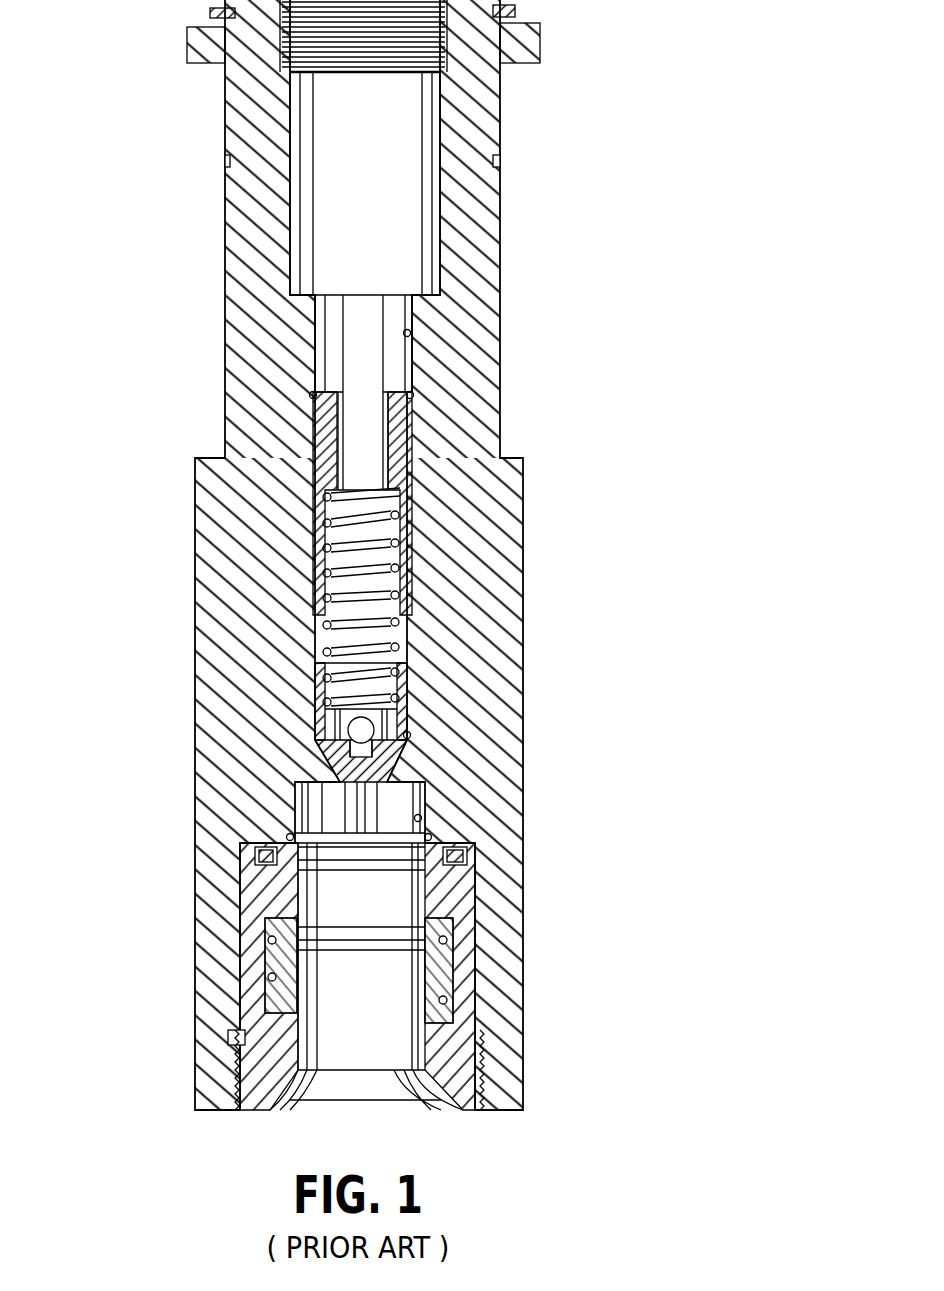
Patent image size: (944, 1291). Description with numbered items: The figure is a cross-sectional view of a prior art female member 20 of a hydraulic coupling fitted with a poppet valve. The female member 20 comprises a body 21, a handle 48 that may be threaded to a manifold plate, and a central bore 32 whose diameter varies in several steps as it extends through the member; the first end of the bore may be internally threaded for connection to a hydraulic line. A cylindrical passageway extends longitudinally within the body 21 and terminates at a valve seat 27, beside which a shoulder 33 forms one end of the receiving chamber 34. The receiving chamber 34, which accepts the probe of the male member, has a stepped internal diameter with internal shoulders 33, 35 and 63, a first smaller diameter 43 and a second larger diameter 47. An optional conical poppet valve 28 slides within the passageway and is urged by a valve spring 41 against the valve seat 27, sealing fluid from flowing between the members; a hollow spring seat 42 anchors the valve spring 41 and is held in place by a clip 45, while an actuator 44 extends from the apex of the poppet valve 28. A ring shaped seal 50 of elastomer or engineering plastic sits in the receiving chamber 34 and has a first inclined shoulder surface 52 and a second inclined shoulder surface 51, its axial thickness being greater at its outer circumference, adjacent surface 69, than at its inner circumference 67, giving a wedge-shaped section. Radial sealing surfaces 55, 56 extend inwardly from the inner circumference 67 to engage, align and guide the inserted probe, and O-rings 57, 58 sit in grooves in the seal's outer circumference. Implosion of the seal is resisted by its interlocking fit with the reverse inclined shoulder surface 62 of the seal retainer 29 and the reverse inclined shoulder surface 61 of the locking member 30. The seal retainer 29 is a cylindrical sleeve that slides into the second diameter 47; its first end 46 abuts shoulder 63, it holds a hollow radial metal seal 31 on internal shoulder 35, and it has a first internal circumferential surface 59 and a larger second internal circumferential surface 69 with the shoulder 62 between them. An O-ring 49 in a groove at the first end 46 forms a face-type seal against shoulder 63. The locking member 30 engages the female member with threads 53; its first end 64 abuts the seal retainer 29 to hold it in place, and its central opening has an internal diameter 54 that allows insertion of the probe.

The female member 20 is at (180, 691).
The body 21 is at (218, 572).
The valve seat 27 is at (410, 735).
The poppet valve 28 is at (318, 752).
The seal retainer 29 is at (470, 918).
The locking member 30 is at (460, 1110).
The hollow radial metal seal 31 is at (286, 836).
The central bore 32 is at (410, 333).
The shoulder 33 is at (422, 790).
The receiving chamber 34 is at (425, 905).
The internal shoulder 35 is at (300, 808).
The valve spring 41 is at (330, 525).
The hollow spring seat 42 is at (320, 440).
The first smaller diameter 43 is at (422, 816).
The actuator 44 is at (350, 800).
The clip 45 is at (413, 395).
The first end 46 is at (431, 837).
The second larger diameter 47 is at (243, 898).
The handle 48 is at (222, 118).
The O-ring 49 is at (462, 858).
The ring shaped seal 50 is at (263, 948).
The second inclined shoulder surface 51 is at (240, 1067).
The first inclined shoulder surface 52 is at (270, 913).
The threads 53 is at (483, 1088).
The internal diameter 54 is at (433, 1058).
The radial sealing surface 55 is at (263, 982).
The radial sealing surface 56 is at (270, 970).
The O-ring 57 is at (435, 1016).
The O-ring 58 is at (447, 940).
The first internal circumferential surface 59 is at (262, 880).
The reverse inclined shoulder surface 61 is at (292, 1040).
The reverse inclined shoulder surface 62 is at (413, 897).
The shoulder 63 is at (258, 852).
The first end 64 is at (237, 1037).
The inner circumference 67 is at (440, 977).
The second internal circumferential surface 69 is at (263, 1013).